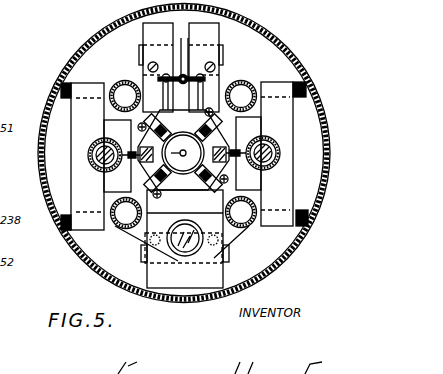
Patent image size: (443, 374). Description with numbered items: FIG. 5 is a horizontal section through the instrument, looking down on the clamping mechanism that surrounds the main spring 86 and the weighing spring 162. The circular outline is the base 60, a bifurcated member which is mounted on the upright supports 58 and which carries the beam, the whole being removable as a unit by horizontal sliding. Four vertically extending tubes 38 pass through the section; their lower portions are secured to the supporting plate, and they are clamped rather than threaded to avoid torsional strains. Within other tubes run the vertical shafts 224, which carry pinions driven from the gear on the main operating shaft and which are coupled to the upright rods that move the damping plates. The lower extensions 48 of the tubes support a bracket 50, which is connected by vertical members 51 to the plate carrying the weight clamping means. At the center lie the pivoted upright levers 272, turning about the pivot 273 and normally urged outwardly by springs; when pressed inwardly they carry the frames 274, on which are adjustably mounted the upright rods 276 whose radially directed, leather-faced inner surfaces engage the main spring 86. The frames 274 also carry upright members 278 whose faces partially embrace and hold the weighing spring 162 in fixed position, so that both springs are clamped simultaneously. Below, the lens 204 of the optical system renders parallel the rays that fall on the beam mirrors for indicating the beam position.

The vertically extending tubes 38 is at (118, 82).
The lower extensions 48 is at (97, 163).
The bracket 50 is at (77, 110).
The vertical members 51 is at (68, 213).
The upright supports 58 is at (224, 60).
The base 60 is at (235, 22).
The main spring 86 is at (185, 130).
The weighing spring 162 is at (184, 76).
The lens 204 is at (173, 249).
The vertical shafts 224 is at (95, 152).
The upright levers 272 is at (138, 145).
The pivot 273 is at (130, 162).
The frames 274 is at (177, 190).
The upright rods 276 is at (162, 126).
The upright members 278 is at (173, 77).